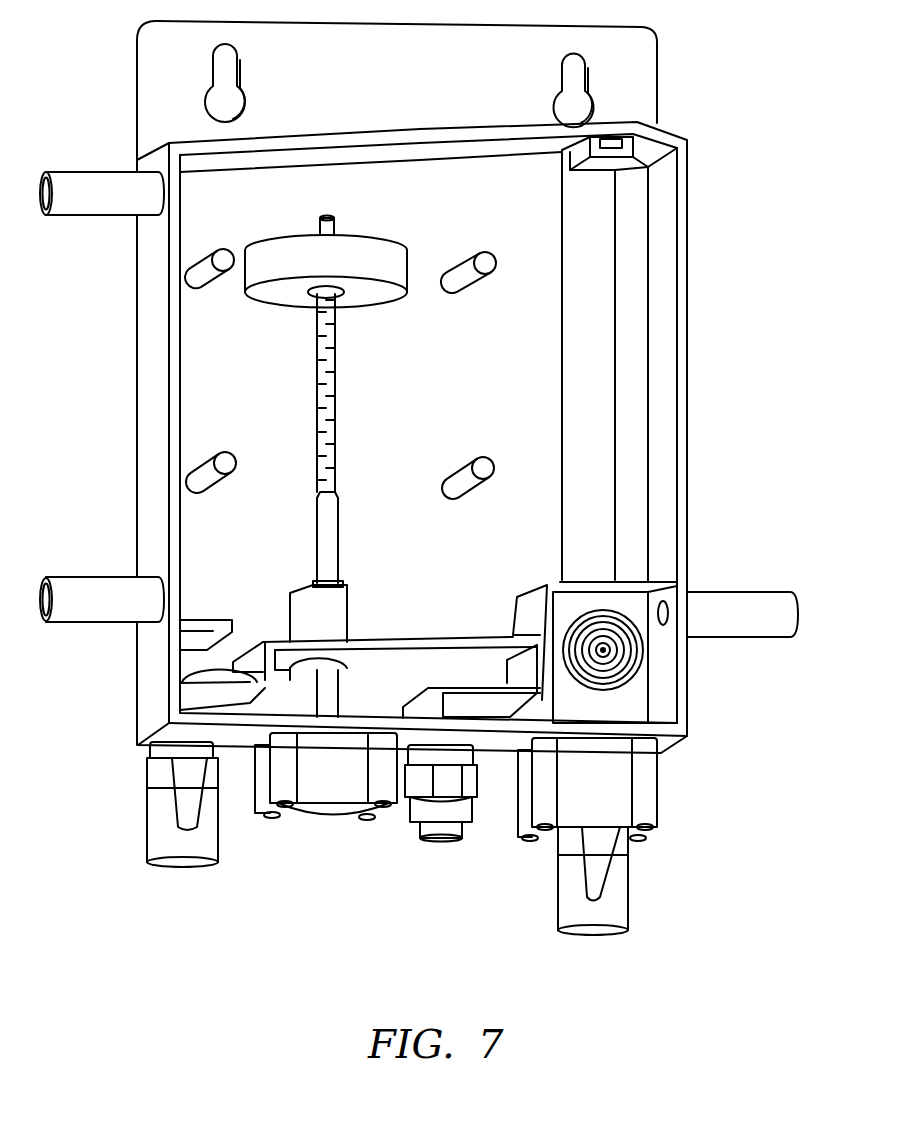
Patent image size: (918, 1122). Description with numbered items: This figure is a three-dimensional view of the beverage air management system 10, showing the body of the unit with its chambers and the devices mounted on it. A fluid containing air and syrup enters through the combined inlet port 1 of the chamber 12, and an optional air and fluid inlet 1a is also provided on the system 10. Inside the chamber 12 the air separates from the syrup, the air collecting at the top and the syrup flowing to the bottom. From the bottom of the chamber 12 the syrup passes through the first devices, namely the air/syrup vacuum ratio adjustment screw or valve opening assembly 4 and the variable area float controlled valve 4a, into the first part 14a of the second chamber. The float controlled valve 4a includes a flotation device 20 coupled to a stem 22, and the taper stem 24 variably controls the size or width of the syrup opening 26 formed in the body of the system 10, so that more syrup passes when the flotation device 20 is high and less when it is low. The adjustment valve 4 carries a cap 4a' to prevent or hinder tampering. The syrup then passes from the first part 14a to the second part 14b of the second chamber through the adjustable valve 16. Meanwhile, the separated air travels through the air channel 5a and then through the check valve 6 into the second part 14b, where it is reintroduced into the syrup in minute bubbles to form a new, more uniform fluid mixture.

The Beverage Air Management System (BAMS) 10 is at (745, 136).
The optional air and fluid inlet 1a is at (97, 181).
The combined inlet port 1 is at (83, 582).
The chamber 12 is at (208, 387).
The flotation device 20 is at (405, 252).
The stem 22 is at (332, 402).
The taper stem 24 is at (335, 552).
The syrup opening 26 is at (310, 583).
The air channel 5a is at (602, 375).
The first part of the second chamber 14a is at (275, 697).
The second part of the second chamber 14b is at (632, 655).
The check valve and associated assembly 6 is at (627, 660).
The air/syrup vacuum ratio adjustment screw or valve opening assembly 4 is at (140, 806).
The cap 4a' is at (140, 814).
The variable area float controlled valve and associated assembly 4a is at (323, 815).
The adjustable valve and associated assembly 16 is at (472, 790).